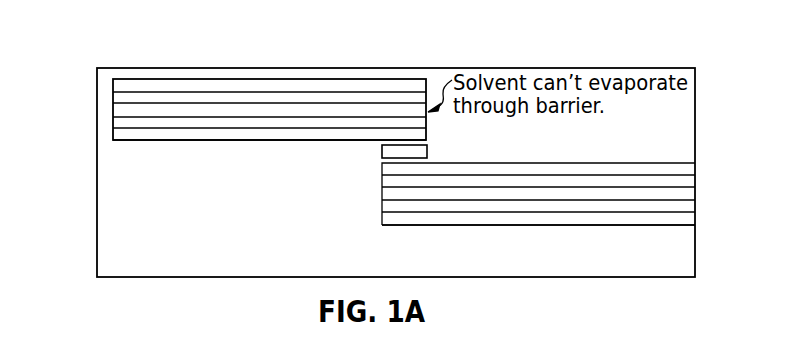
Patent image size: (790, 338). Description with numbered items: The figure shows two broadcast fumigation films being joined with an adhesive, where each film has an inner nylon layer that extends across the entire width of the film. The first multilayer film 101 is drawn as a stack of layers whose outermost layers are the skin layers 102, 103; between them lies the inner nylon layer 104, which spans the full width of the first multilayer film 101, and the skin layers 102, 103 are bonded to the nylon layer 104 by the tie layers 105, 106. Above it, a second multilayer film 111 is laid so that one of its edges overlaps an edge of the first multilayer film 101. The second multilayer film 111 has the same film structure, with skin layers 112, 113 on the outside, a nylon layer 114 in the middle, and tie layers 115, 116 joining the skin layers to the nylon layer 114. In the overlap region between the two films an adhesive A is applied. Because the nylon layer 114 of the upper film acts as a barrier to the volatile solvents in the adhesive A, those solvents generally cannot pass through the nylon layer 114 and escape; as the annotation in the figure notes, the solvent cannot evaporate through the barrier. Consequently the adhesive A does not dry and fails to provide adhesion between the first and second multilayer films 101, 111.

The first multilayer film 101 is at (540, 227).
The skin layer 102 is at (647, 170).
The skin layer 103 is at (388, 220).
The inner nylon layer 104 is at (388, 195).
The tie layer 105 is at (388, 182).
The tie layer 106 is at (388, 207).
The second multilayer film 111 is at (158, 81).
The skin layer 112 is at (298, 90).
The skin layer 113 is at (165, 133).
The nylon layer 114 is at (368, 110).
The tie layer 115 is at (123, 100).
The tie layer 116 is at (123, 125).
The adhesive A is at (413, 151).